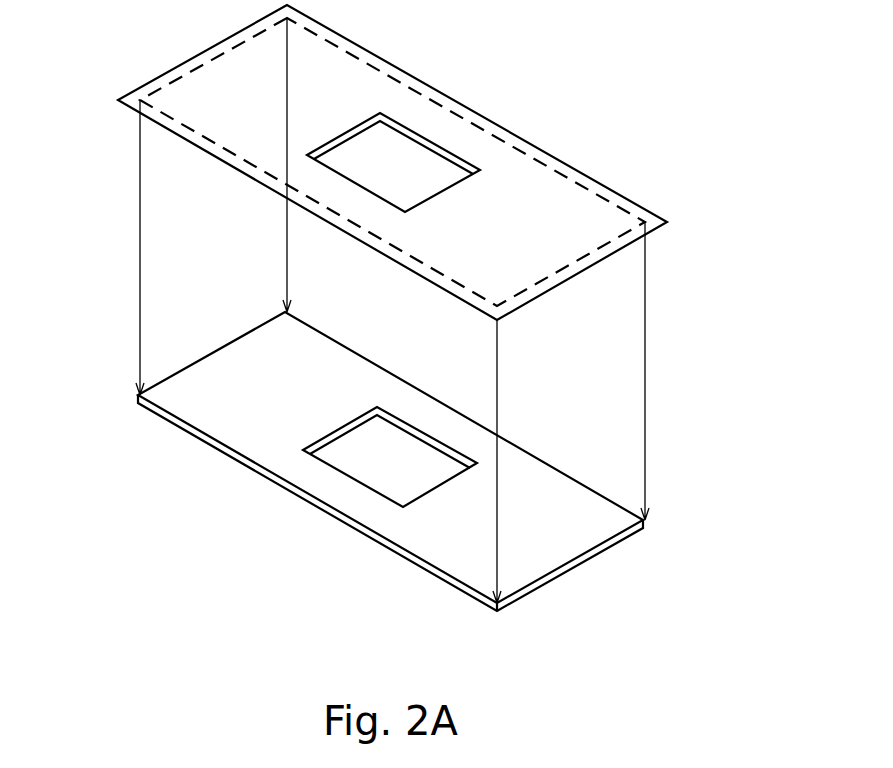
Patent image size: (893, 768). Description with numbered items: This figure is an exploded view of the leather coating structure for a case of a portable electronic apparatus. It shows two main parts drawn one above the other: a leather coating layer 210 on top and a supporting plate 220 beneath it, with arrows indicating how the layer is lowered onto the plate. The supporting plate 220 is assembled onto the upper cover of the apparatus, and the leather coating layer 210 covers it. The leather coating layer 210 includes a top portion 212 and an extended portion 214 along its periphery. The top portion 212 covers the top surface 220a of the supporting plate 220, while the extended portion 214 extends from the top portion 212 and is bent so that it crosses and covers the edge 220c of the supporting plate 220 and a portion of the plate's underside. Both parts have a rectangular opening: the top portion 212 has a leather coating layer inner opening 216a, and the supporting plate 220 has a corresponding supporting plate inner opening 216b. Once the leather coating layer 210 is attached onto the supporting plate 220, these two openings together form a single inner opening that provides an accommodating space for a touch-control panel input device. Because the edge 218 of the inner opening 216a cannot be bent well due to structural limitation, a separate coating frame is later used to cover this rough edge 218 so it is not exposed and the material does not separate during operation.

The leather coating layer 210 is at (653, 207).
The top portion 212 is at (320, 52).
The extended portion 214 is at (220, 45).
The leather coating layer inner opening 216a is at (417, 158).
The edge of the inner opening 218 is at (350, 140).
The supporting plate 220 is at (172, 417).
The top surface 220a is at (260, 448).
The edge 220c is at (425, 567).
The supporting plate inner opening 216b is at (355, 460).